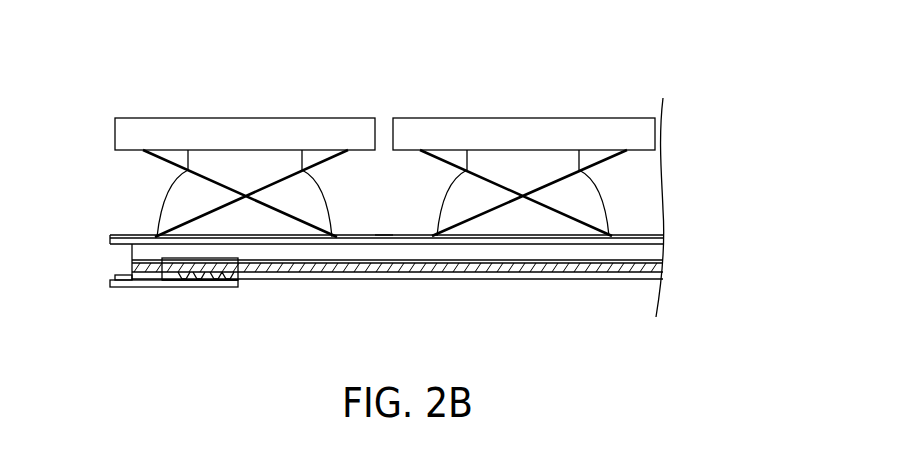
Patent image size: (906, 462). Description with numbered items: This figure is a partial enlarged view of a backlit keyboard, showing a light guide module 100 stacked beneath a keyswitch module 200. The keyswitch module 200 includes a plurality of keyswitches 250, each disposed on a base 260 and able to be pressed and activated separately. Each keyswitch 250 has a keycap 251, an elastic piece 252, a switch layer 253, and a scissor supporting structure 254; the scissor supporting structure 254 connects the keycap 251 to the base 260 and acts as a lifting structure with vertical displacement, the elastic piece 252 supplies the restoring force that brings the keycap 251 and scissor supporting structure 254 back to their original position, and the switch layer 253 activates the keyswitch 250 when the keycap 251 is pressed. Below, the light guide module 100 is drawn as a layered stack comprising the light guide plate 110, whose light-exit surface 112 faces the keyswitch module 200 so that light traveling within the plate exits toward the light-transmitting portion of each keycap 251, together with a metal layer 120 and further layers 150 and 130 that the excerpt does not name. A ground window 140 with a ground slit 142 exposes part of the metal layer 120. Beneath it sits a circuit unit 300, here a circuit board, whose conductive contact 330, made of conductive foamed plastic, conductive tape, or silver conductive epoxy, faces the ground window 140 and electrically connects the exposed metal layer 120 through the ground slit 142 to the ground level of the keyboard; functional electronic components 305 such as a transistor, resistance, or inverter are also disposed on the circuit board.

The light guide module 100 is at (455, 207).
The light guide plate 110 is at (428, 209).
The light-exit surface 112 is at (642, 245).
The metal layer 120 is at (658, 268).
The third substrate 130 is at (655, 277).
The ground window 140 is at (226, 300).
The ground slit 142 is at (232, 282).
The intermediate layer 150 is at (665, 261).
The keyswitch module 200 is at (409, 120).
The keyswitch 250 is at (385, 118).
The keycap 251 is at (168, 137).
The elastic piece 252 is at (207, 167).
The switch layer 253 is at (263, 237).
The scissor supporting structure 254 is at (230, 182).
The base 260 is at (365, 240).
The circuit unit 300 is at (146, 291).
The functional electronic components 305 is at (117, 277).
The conductive contact 330 is at (180, 281).